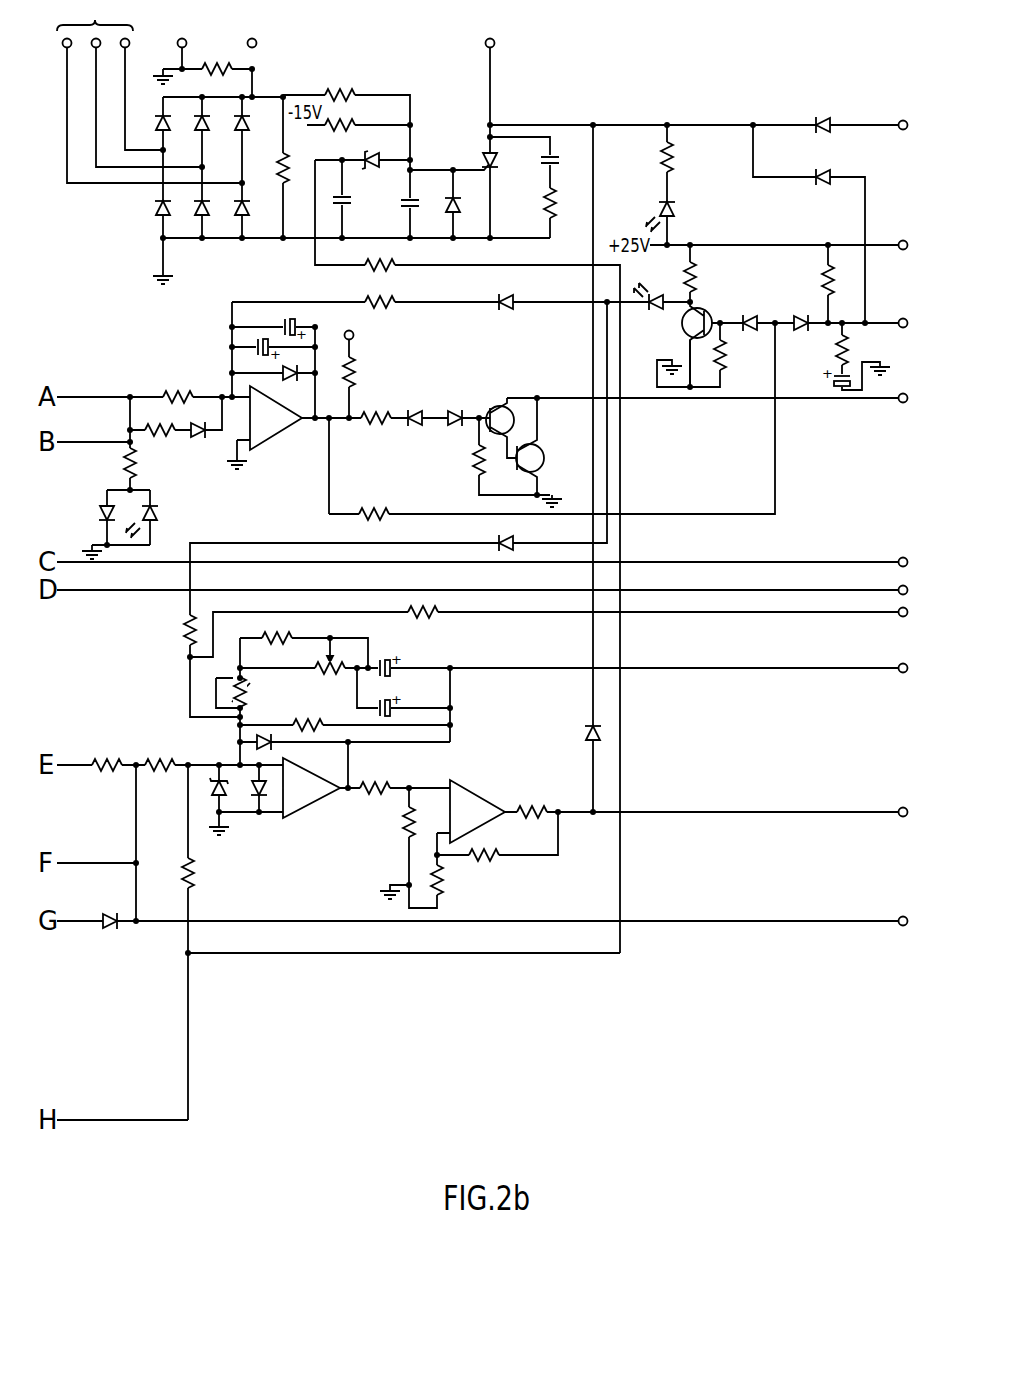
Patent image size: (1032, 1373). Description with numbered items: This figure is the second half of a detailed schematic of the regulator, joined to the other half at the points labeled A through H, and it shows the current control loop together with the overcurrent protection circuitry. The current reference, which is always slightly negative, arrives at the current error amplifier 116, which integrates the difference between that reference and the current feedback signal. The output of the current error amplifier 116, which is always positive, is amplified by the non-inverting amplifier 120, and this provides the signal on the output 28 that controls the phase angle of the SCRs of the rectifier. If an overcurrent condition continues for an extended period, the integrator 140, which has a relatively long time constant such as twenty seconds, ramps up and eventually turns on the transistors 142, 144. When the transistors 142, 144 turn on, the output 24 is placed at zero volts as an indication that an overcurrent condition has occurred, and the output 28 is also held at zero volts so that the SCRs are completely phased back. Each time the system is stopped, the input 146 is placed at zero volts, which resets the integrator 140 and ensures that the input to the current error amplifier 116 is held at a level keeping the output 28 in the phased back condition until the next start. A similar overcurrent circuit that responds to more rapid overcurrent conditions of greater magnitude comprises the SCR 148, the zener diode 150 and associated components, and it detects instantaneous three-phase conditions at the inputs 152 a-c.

The output 24 is at (916, 126).
The output 28 is at (916, 813).
The current error amplifier 116 is at (312, 793).
The non-inverting amplifier 120 is at (478, 806).
The integrator 140 is at (275, 425).
The transistor 142 is at (498, 406).
The transistor 144 is at (534, 466).
The input 146 is at (919, 324).
The SCR 148 is at (487, 157).
The zener diode 150 is at (367, 166).
The inputs 152 is at (95, 15).